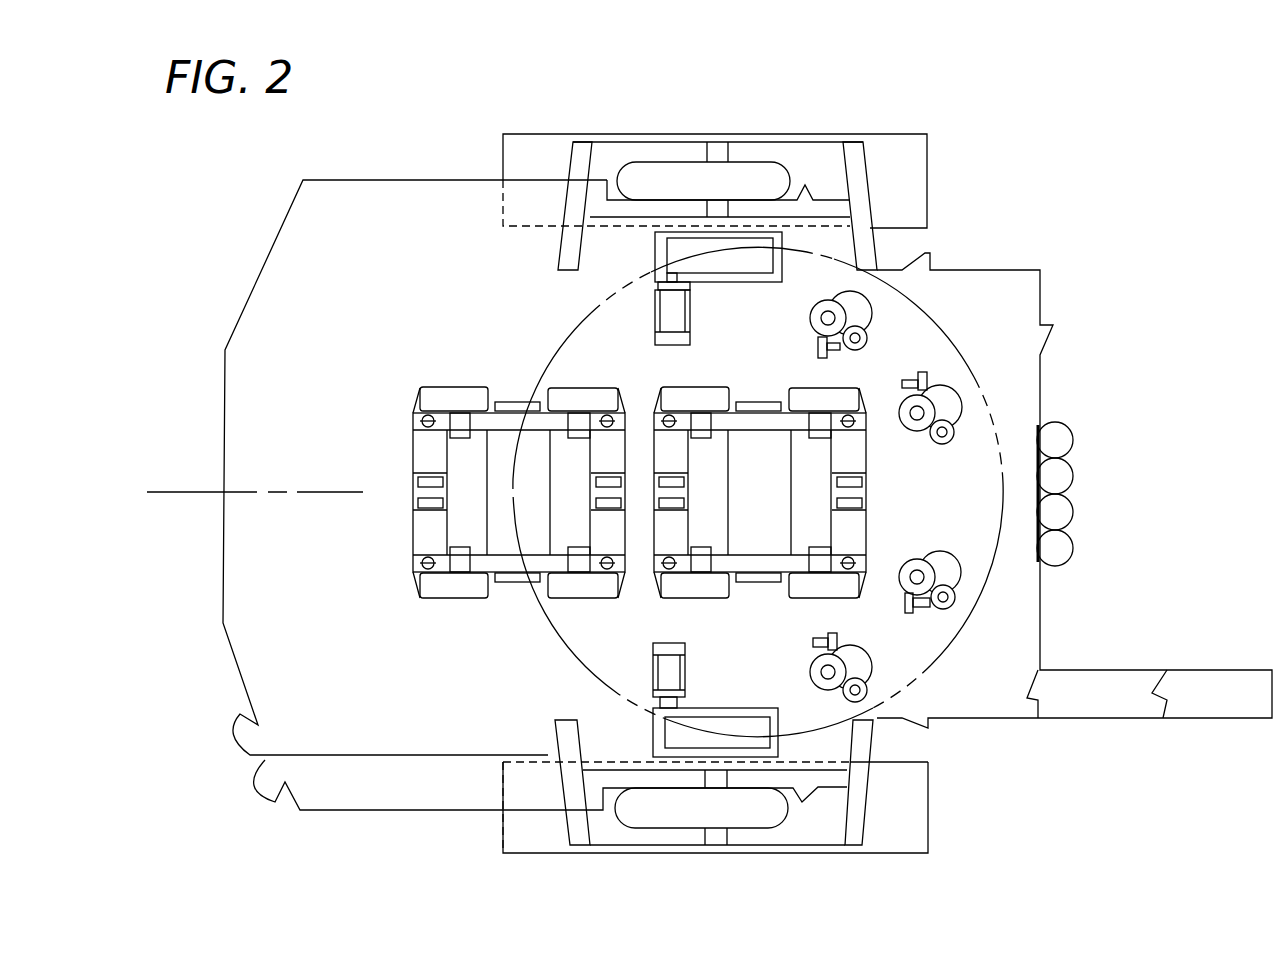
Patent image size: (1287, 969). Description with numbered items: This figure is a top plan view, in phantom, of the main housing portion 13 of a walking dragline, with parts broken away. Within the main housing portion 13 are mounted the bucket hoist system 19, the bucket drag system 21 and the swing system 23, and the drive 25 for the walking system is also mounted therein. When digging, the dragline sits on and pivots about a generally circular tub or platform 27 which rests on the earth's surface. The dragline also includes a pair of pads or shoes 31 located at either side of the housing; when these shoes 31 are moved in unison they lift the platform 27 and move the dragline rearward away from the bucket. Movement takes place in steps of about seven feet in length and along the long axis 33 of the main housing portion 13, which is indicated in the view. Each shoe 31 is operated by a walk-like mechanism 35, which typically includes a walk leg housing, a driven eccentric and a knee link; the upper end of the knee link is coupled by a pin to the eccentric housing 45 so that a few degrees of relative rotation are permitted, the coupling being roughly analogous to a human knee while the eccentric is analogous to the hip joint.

The main housing portion 13 is at (360, 188).
The bucket hoist system 19 is at (832, 390).
The bucket drag system 21 is at (467, 387).
The swing system 23 is at (873, 310).
The drive 25 is at (690, 325).
The platform 27 is at (958, 348).
The shoes 31 is at (927, 161).
The long axis 33 is at (237, 492).
The walk-like mechanism 35 is at (765, 833).
The eccentric housing 45 is at (650, 812).